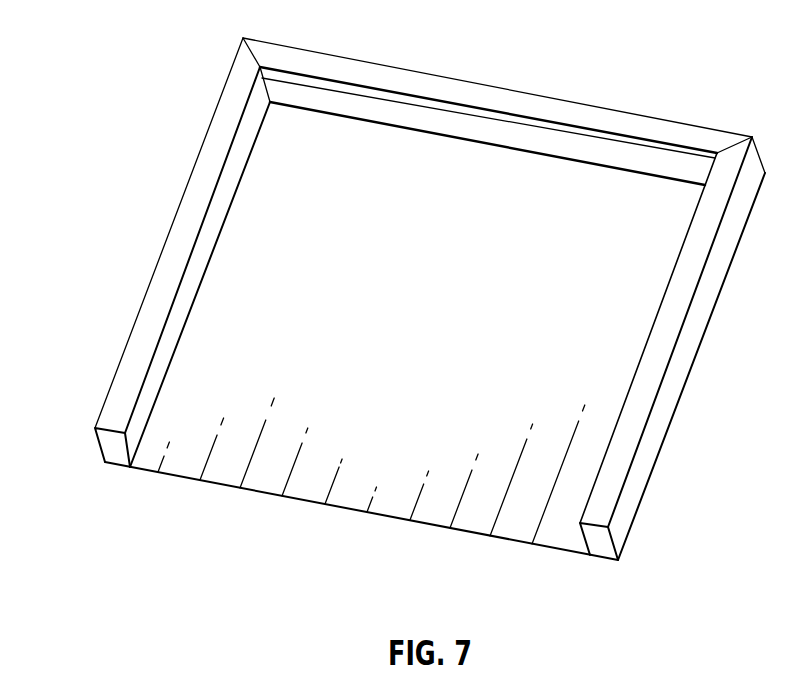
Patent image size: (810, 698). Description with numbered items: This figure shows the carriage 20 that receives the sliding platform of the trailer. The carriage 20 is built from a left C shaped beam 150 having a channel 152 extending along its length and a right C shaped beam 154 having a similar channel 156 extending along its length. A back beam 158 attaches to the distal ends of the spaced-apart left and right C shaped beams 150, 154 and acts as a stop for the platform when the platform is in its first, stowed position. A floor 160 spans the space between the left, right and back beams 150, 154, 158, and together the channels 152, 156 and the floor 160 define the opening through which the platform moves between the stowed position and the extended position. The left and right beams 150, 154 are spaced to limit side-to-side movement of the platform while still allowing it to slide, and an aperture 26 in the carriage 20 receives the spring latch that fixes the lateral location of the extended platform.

The carriage 20 is at (392, 331).
The aperture 26 is at (638, 525).
The left C shaped beam 150 is at (181, 281).
The channel 152 is at (110, 447).
The right C shaped beam 154 is at (676, 380).
The channel 156 is at (590, 544).
The back beam 158 is at (530, 112).
The floor 160 is at (443, 455).